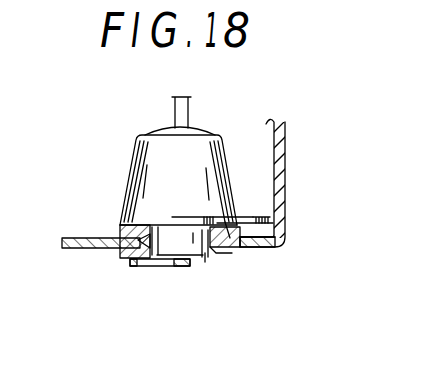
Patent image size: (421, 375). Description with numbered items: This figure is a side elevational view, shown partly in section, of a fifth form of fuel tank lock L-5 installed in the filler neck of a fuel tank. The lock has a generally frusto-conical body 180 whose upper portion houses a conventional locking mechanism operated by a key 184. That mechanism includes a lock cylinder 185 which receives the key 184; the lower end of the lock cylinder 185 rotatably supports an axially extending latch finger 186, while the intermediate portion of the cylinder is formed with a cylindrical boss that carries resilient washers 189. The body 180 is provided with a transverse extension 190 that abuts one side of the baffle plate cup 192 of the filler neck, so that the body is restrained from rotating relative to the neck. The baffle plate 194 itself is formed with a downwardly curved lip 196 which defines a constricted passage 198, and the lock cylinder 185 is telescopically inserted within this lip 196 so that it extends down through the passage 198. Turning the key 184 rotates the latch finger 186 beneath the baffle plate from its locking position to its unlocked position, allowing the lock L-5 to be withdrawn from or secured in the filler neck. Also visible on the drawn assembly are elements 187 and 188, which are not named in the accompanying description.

The frusto-conical body 180 is at (124, 182).
The key 184 is at (186, 100).
The fuel tank lock L-5 is at (138, 134).
The lock cylinder 185 is at (194, 256).
The latch finger 186 is at (137, 264).
The seal 187 is at (141, 245).
The hub 188 is at (150, 225).
The resilient washers 189 is at (216, 235).
The transverse extension 190 is at (257, 216).
The baffle plate cup 192 is at (286, 181).
The baffle plate 194 is at (60, 238).
The downwardly curved lip 196 is at (222, 250).
The constricted passage 198 is at (202, 255).